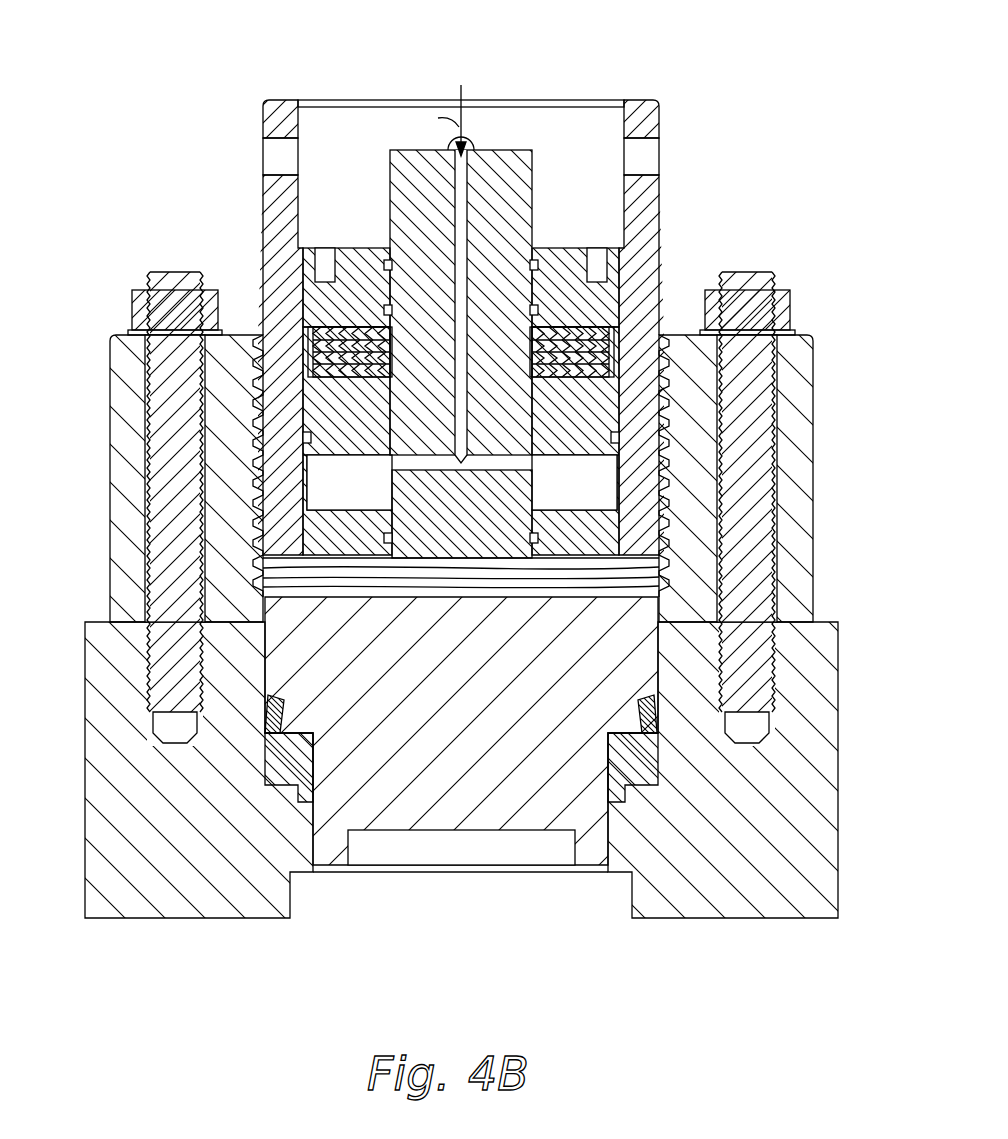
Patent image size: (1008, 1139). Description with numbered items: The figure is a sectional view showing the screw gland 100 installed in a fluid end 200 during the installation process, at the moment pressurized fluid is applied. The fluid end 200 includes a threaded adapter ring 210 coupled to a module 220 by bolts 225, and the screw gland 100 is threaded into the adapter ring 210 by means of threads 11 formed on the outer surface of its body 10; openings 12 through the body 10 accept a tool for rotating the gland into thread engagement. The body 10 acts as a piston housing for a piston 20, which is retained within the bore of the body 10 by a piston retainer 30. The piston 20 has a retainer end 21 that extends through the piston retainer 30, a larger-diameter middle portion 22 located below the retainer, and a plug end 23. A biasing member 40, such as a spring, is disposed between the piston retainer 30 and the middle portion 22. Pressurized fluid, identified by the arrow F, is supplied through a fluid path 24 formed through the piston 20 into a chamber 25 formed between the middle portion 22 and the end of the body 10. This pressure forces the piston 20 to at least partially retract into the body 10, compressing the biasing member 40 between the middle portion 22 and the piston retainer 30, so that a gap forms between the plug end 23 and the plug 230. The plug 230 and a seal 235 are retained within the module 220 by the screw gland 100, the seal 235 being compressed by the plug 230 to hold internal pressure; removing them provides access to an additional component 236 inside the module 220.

The screw gland 100 is at (464, 361).
The fluid end 200 is at (439, 487).
The body 10 is at (663, 190).
The threads 11 is at (666, 445).
The openings 12 is at (276, 157).
The piston 20 is at (461, 378).
The retainer end 21 is at (412, 180).
The middle portion 22 is at (325, 412).
The plug end 23 is at (455, 538).
The fluid path 24 is at (463, 229).
The chamber 25 is at (590, 490).
The piston retainer 30 is at (341, 249).
The biasing member 40 is at (564, 326).
The threaded adapter ring 210 is at (110, 532).
The module 220 is at (150, 921).
The bolts 225 is at (182, 270).
The plug 230 is at (305, 675).
The seal 235 is at (267, 708).
The component 236 is at (270, 770).